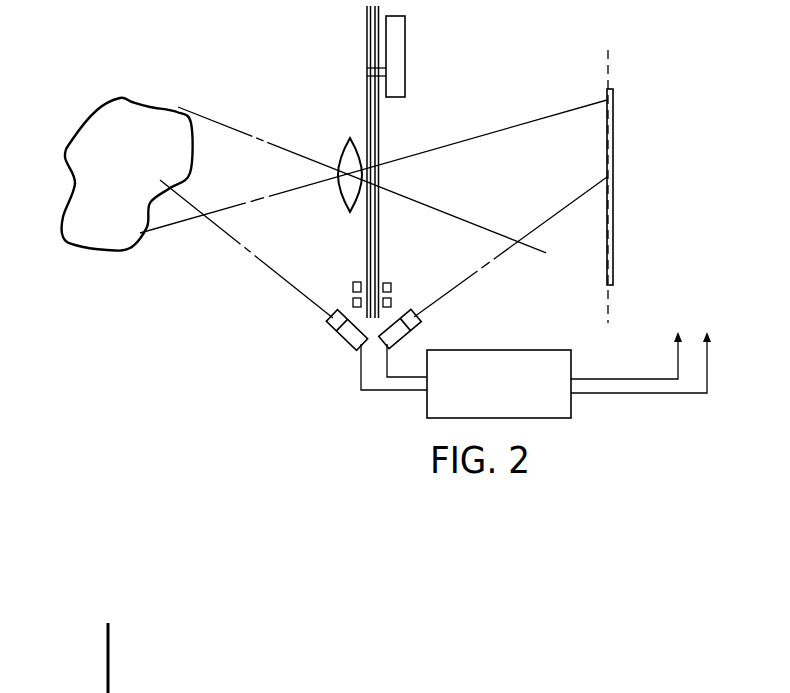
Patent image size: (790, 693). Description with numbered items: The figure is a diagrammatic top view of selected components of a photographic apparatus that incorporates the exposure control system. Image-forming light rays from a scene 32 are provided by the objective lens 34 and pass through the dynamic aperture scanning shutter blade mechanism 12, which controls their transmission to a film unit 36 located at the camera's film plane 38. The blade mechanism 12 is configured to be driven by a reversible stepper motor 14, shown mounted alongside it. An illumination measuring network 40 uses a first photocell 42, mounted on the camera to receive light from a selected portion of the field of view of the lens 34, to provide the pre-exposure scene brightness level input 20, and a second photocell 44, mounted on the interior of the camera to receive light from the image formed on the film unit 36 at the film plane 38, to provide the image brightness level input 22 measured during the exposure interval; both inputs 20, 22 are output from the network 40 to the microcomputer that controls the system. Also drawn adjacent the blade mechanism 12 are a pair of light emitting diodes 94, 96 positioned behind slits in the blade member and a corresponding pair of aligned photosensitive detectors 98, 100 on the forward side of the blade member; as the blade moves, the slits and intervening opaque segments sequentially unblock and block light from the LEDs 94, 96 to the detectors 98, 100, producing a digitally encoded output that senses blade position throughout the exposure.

The dynamic aperture scanning shutter blade mechanism 12 is at (387, 140).
The reversible stepper motor 14 is at (399, 29).
The preexposure scene brightness level input 20 is at (646, 351).
The image brightness level input 22 is at (630, 344).
The scene 32 is at (128, 128).
The objective lens 34 is at (347, 157).
The film unit 36 is at (613, 143).
The film plane 38 is at (608, 55).
The illumination measuring network 40 is at (533, 350).
The first photocell 42 is at (340, 336).
The second photocell 44 is at (401, 339).
The light emitting diode 94 is at (391, 283).
The light emitting diode 96 is at (391, 302).
The photosensitive detector 98 is at (357, 281).
The photosensitive detector 100 is at (353, 302).